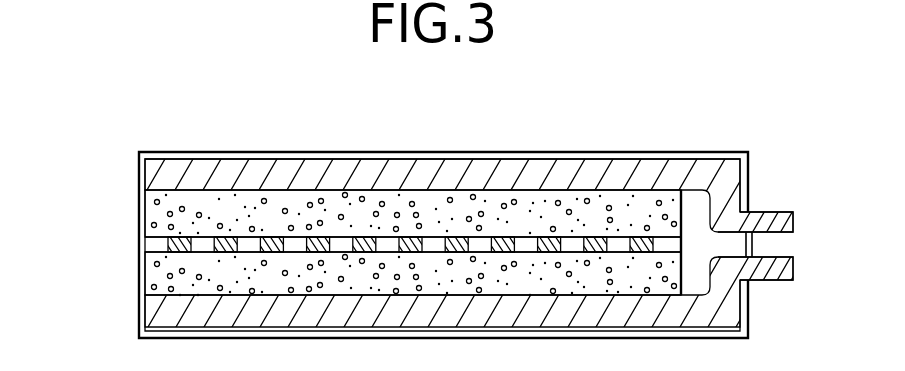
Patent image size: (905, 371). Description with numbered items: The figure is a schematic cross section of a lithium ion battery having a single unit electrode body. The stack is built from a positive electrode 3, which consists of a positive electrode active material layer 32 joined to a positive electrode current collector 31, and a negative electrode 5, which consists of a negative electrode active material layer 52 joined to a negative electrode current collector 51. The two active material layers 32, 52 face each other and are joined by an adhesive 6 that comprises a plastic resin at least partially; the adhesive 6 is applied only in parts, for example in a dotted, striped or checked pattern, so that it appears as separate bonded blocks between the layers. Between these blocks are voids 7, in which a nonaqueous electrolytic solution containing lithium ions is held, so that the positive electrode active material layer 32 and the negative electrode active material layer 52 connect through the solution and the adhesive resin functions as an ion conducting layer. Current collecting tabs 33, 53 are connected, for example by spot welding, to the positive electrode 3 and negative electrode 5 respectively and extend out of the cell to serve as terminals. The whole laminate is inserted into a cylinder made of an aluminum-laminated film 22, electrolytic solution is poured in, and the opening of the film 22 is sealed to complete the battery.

The positive electrode 3 is at (454, 225).
The positive electrode current collector 31 is at (152, 167).
The positive electrode active material layer 32 is at (152, 208).
The current collecting tab 33 is at (772, 218).
The negative electrode 5 is at (467, 289).
The negative electrode current collector 51 is at (152, 303).
The negative electrode active material layer 52 is at (152, 258).
The current collecting tab 53 is at (773, 272).
The adhesive 6 is at (640, 242).
The voids 7 is at (615, 242).
The aluminum-laminated film 22 is at (553, 152).